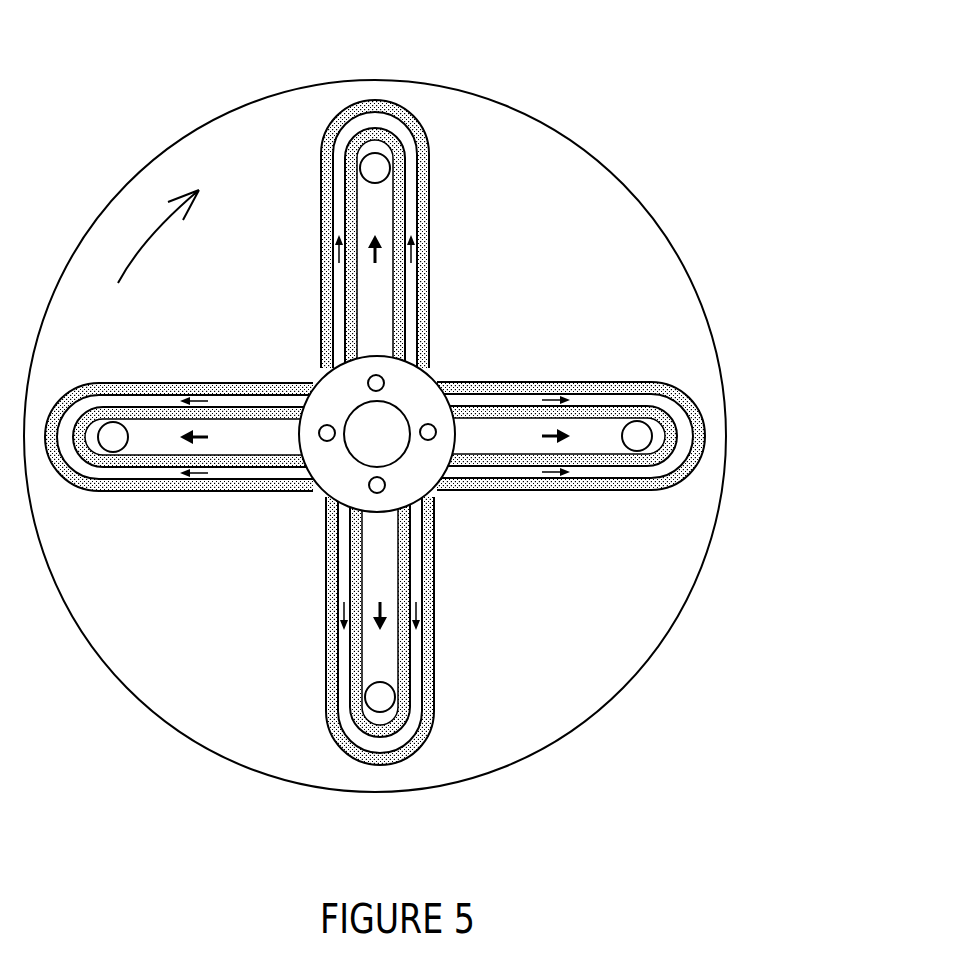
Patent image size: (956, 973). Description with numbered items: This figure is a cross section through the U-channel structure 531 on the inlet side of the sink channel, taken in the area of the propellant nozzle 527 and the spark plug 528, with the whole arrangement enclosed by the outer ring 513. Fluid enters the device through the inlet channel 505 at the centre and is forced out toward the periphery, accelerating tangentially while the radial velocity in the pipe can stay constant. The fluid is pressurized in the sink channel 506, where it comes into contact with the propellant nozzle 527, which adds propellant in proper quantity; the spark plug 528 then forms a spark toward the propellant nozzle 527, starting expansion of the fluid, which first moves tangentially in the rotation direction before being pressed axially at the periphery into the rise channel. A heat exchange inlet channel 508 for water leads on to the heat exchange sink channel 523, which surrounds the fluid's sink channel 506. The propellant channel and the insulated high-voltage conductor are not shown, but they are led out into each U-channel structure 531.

The housing 513 is at (533, 117).
The U-channel structure 531 is at (374, 100).
The inlet channel 505 is at (373, 432).
The sink channel 506 is at (546, 436).
The heat exchange inlet channel 508 is at (434, 428).
The heat exchange sink channel 523 is at (582, 402).
The propellant nozzle 527 is at (390, 708).
The spark plug 528 is at (370, 708).